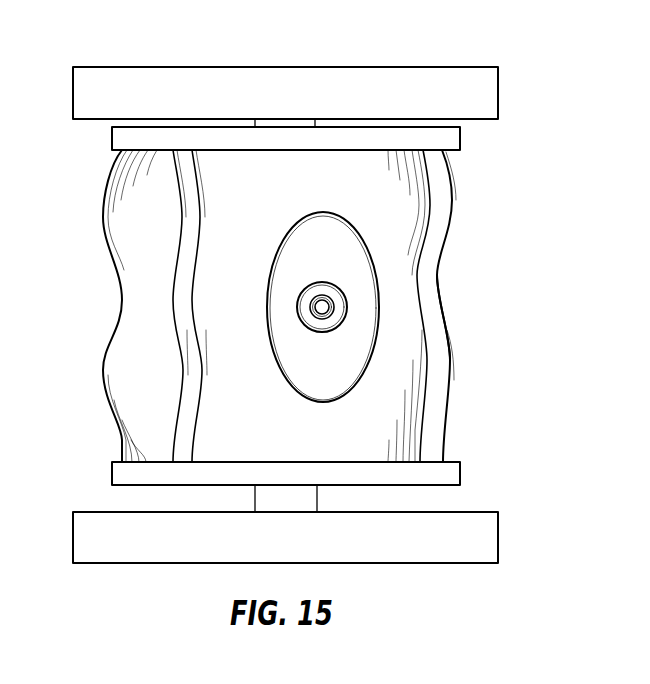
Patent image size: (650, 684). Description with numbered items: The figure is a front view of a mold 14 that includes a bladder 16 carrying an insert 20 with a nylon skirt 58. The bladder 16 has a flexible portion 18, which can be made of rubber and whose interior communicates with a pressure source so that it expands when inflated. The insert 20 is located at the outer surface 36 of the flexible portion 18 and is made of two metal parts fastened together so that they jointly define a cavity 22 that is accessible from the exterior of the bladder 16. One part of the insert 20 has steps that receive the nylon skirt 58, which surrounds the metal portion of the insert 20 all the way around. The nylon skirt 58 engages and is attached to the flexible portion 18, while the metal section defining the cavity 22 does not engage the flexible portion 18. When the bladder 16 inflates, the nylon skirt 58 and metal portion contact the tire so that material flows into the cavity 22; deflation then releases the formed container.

The mold 14 is at (494, 46).
The bladder 16 is at (447, 204).
The flexible portion 18 is at (400, 395).
The insert 20 is at (322, 282).
The cavity 22 is at (309, 307).
The outer surface 36 is at (412, 345).
The nylon skirt 58 is at (295, 242).